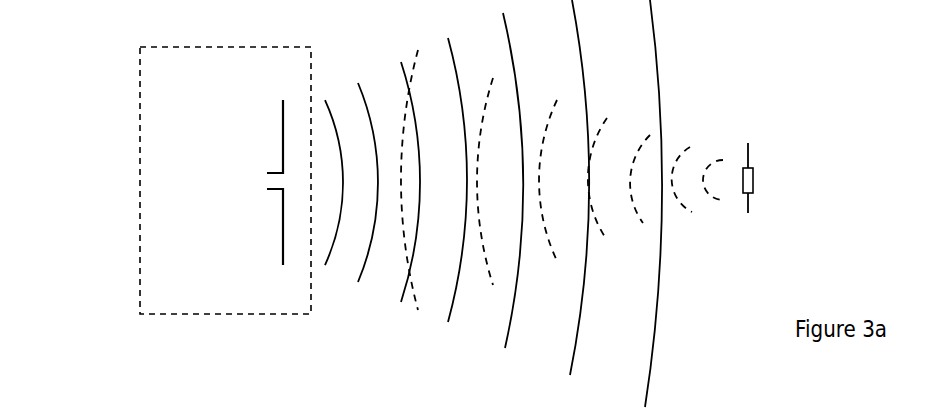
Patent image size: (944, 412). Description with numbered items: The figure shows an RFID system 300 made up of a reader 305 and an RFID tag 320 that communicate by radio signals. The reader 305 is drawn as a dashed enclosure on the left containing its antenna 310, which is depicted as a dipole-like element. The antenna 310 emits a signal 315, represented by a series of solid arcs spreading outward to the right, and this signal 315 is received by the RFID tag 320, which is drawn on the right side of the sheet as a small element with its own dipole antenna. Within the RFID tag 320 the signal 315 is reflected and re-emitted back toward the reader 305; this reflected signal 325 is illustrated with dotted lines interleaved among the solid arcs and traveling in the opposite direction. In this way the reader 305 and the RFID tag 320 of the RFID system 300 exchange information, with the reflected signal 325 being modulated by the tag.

The RFID system 300 is at (99, 360).
The reader 305 is at (179, 47).
The antenna 310 is at (283, 136).
The signal 315 is at (572, 347).
The RFID tag 320 is at (777, 172).
The reflected signal 325 is at (638, 143).